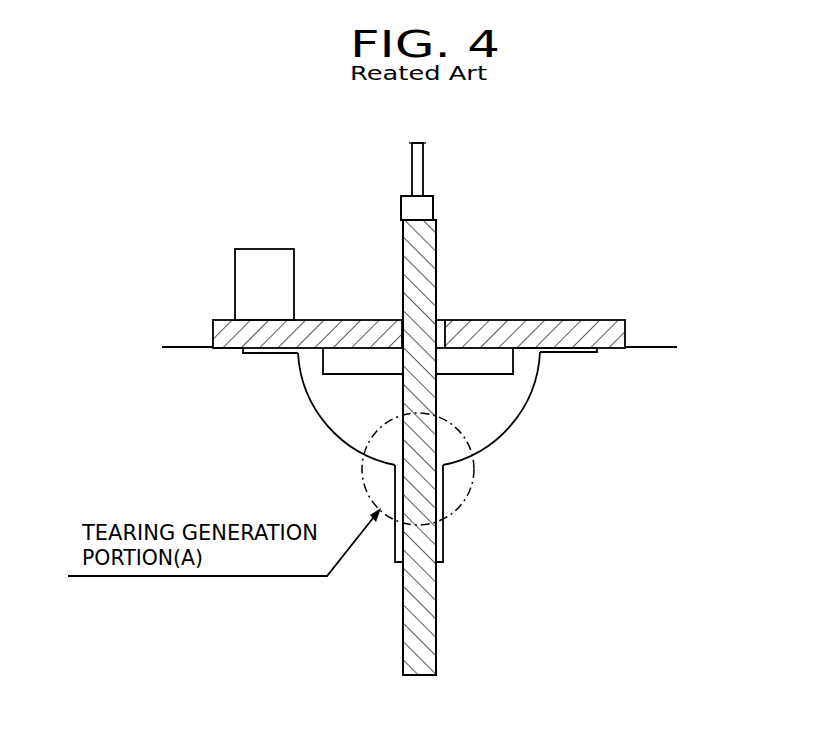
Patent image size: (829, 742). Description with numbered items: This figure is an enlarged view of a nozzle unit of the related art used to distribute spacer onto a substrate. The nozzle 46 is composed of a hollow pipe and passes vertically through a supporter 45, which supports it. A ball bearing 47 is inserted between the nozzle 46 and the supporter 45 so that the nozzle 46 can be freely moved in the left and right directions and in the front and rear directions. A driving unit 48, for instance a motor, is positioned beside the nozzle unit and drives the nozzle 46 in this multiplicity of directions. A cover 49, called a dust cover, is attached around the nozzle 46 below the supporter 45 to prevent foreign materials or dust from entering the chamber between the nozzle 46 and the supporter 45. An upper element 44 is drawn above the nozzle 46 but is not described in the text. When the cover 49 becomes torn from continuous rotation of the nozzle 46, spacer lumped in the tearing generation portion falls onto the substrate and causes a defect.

The rod 44 is at (414, 181).
The supporter 45 is at (613, 332).
The nozzle 46 is at (427, 648).
The ball bearing 47 is at (397, 327).
The driving unit 48 is at (241, 278).
The cover 49 is at (513, 427).